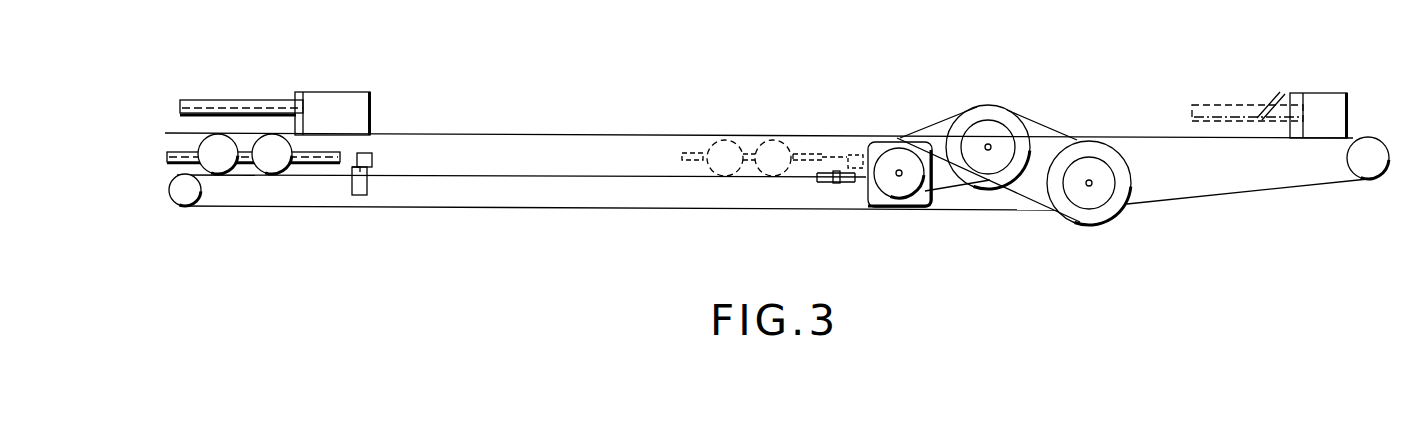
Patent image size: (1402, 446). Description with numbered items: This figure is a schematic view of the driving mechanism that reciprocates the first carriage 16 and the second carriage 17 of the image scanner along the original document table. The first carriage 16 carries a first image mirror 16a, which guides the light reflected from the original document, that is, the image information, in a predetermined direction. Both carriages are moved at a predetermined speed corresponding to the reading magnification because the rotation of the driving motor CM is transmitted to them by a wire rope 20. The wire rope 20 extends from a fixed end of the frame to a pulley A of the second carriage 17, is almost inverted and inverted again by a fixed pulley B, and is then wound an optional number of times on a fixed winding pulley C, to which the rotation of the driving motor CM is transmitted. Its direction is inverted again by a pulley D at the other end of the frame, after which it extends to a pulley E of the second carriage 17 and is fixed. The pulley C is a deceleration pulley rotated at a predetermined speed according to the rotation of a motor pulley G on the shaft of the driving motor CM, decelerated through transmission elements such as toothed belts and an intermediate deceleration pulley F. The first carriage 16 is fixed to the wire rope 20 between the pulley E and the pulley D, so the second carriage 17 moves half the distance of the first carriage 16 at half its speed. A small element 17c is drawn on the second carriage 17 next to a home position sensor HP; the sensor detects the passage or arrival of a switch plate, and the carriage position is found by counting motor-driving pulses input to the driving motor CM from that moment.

The first image mirror 16a is at (275, 98).
The first carriage 16 is at (303, 98).
The second carriage 17 is at (320, 168).
The arm actuator box 17c is at (377, 158).
The home position sensor HP is at (367, 187).
The wire rope 20 is at (600, 177).
The fixed pulley B is at (185, 207).
The pulley A is at (218, 174).
The pulley E is at (273, 174).
The driving motor CM is at (870, 210).
The motor pulley G is at (905, 192).
The intermediate deceleration pulley F is at (988, 105).
The fixed pulley C is at (1090, 227).
The pulley D is at (1368, 179).